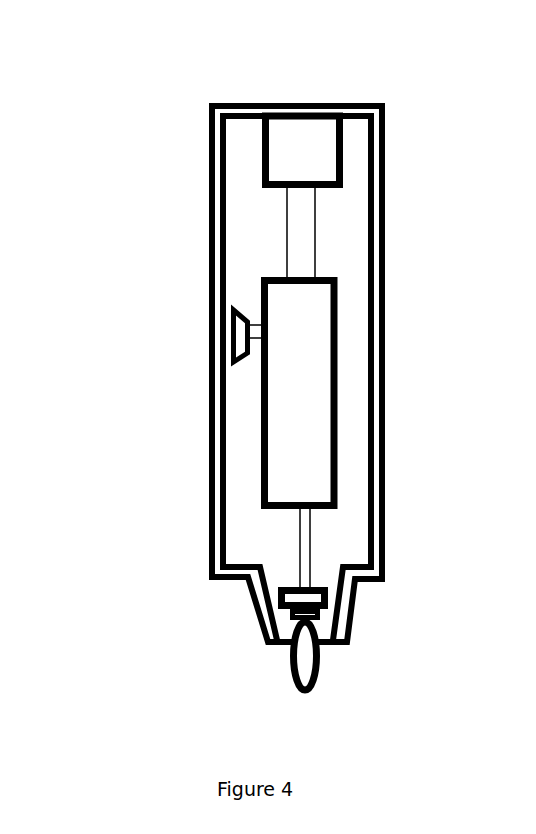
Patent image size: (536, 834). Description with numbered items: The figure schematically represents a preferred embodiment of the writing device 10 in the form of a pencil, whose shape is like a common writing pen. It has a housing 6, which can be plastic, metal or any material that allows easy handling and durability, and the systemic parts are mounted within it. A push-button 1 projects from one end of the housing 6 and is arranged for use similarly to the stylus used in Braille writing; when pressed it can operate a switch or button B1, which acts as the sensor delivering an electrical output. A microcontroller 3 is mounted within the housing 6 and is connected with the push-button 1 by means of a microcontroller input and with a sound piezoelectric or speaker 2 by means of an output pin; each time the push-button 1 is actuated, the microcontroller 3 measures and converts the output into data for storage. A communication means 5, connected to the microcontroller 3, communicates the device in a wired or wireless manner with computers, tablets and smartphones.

The writing instrument 10 is at (118, 80).
The housing 6 is at (209, 187).
The communication means 5 is at (342, 147).
The microcontroller 3 is at (338, 390).
The sound piezoelectric 2 is at (232, 345).
The switch or button B1 is at (328, 605).
The push-button 1 is at (317, 677).